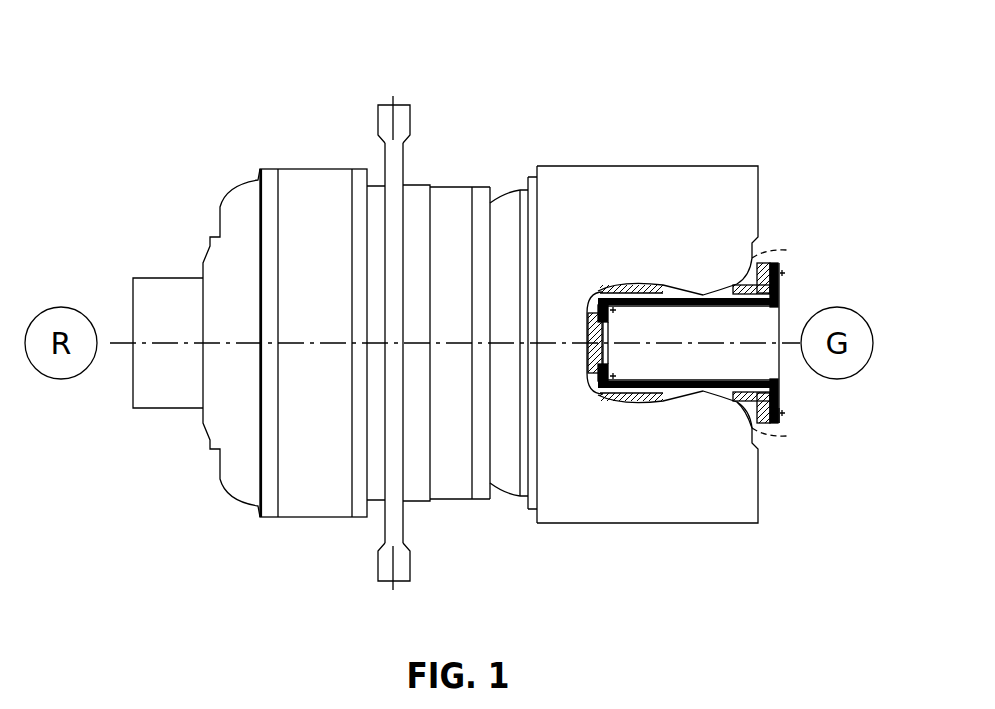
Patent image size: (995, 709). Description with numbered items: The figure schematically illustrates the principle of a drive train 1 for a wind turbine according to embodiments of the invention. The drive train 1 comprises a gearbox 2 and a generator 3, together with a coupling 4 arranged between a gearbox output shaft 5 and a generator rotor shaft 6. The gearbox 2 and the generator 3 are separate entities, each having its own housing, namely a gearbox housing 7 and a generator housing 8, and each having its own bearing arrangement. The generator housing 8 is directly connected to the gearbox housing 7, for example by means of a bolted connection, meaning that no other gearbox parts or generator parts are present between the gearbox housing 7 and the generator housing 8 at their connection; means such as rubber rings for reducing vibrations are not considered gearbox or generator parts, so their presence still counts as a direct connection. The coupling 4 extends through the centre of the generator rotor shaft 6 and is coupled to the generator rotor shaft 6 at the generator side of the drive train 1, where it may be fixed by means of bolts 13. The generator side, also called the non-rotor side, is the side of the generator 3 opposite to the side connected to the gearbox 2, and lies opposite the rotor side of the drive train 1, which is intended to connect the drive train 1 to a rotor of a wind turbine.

The drive train 1 is at (480, 68).
The gearbox 2 is at (259, 357).
The generator 3 is at (653, 357).
The coupling 4 is at (647, 300).
The gearbox output shaft 5 is at (596, 297).
The generator rotor shaft 6 is at (757, 266).
The gearbox housing 7 is at (312, 182).
The generator housing 8 is at (705, 200).
The bolts 13 is at (785, 412).